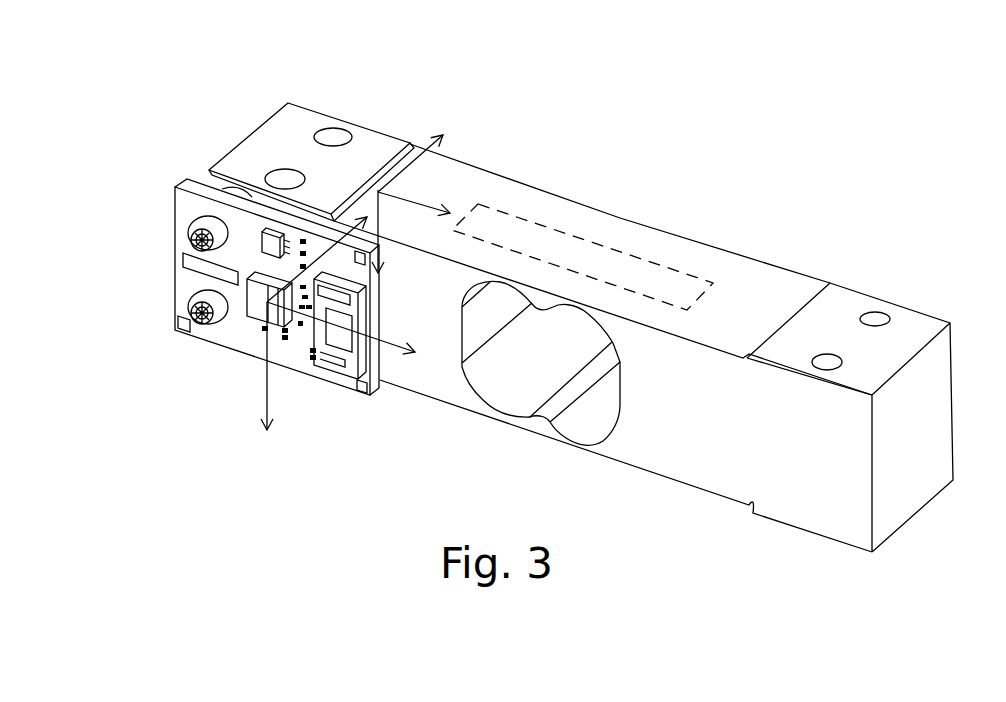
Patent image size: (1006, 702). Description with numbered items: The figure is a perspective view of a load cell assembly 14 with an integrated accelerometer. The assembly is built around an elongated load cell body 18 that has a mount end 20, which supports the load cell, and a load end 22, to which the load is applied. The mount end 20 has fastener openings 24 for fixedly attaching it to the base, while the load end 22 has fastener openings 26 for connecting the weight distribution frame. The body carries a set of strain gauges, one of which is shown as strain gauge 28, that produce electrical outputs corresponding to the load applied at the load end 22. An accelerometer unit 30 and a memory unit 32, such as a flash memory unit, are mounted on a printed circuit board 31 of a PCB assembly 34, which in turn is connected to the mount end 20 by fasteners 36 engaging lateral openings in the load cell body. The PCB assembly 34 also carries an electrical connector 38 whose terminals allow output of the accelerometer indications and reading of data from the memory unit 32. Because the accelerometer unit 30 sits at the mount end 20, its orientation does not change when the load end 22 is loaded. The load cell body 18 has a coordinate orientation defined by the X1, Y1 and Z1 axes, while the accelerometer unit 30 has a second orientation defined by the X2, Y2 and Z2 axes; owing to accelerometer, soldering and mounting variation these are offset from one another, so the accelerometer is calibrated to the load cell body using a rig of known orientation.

The load cell assembly 14 is at (813, 165).
The elongated load cell body 18 is at (798, 282).
The mount end 20 is at (372, 128).
The load end 22 is at (913, 308).
The fastener openings 24 is at (328, 130).
The fastener openings 26 is at (876, 313).
The strain gauge 28 is at (538, 228).
The accelerometer unit 30 is at (260, 311).
The printed circuit board 31 is at (207, 333).
The memory unit 32 is at (271, 243).
The PCB assembly 34 is at (174, 330).
The fasteners 36 is at (193, 223).
The electrical connector 38 is at (337, 368).
The X1 axis X1 is at (414, 161).
The Y1 axis Y1 is at (423, 193).
The Z1 axis Z1 is at (383, 250).
The X2 axis X2 is at (330, 255).
The Y2 axis Y2 is at (393, 348).
The Z2 axis Z2 is at (262, 393).